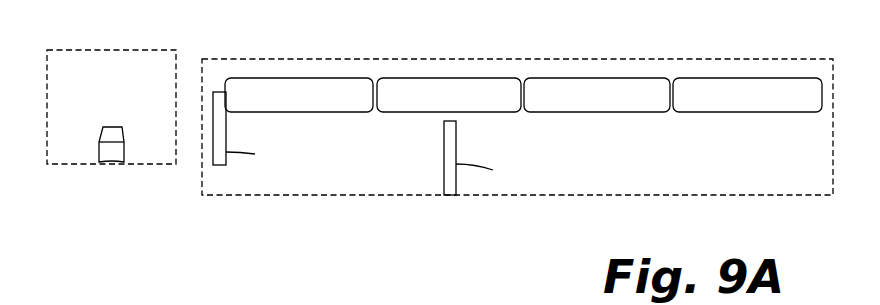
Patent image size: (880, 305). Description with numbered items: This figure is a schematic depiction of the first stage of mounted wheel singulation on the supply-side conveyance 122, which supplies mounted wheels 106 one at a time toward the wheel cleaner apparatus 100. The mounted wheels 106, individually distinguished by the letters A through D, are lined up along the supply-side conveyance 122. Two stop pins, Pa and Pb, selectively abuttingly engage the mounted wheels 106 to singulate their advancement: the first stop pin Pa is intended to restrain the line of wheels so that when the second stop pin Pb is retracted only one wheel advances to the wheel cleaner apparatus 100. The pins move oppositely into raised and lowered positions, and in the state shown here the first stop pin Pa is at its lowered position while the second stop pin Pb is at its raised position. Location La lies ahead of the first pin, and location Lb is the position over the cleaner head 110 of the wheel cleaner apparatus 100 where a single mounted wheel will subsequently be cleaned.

The wheel cleaner apparatus 100 is at (128, 167).
The cleaner head 110 is at (108, 157).
The supply-side conveyance 122 is at (395, 204).
The mounted wheels 106 is at (365, 77).